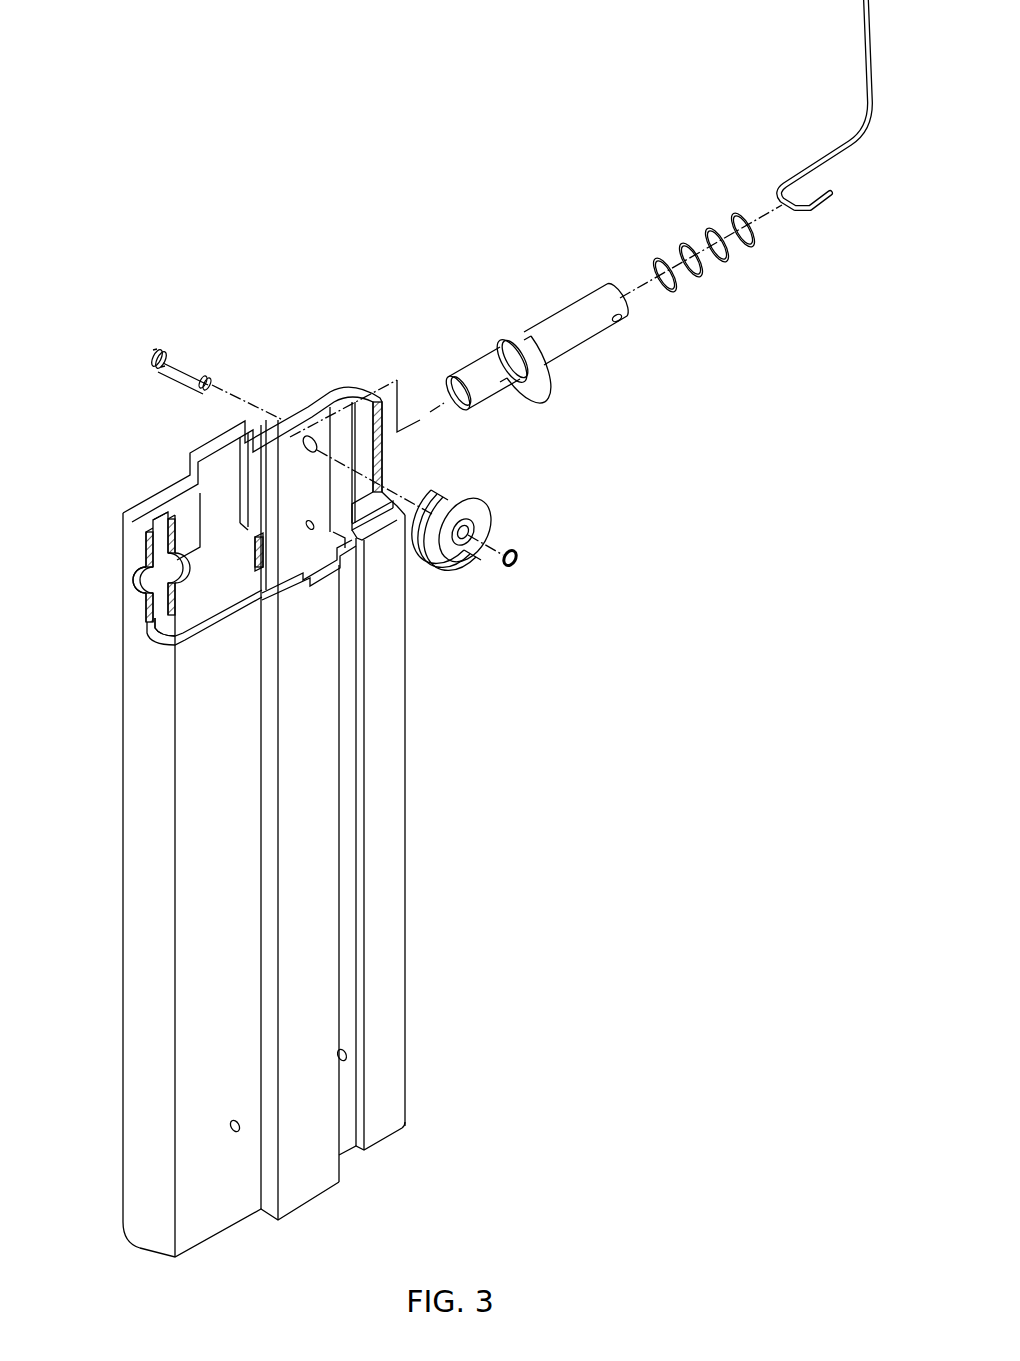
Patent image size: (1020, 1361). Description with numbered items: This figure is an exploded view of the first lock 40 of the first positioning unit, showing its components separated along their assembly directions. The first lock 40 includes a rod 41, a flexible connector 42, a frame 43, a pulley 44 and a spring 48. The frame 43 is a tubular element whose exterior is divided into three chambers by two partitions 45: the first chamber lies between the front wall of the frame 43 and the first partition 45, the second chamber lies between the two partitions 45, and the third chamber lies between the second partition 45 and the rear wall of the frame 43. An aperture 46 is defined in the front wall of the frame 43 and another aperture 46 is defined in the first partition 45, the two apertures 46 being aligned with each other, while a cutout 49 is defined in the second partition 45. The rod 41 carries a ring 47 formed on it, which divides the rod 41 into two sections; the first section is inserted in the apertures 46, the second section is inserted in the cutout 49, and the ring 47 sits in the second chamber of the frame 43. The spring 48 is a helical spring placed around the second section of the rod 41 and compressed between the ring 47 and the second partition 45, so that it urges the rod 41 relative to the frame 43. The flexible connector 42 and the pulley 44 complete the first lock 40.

The first lock 40 is at (314, 282).
The rod 41 is at (487, 383).
The flexible connector 42 is at (867, 50).
The frame 43 is at (385, 635).
The pulley 44 is at (480, 512).
The partitions 45 is at (237, 450).
The aperture 46 is at (157, 572).
The ring 47 is at (521, 343).
The spring 48 is at (712, 280).
The cutout 49 is at (178, 607).